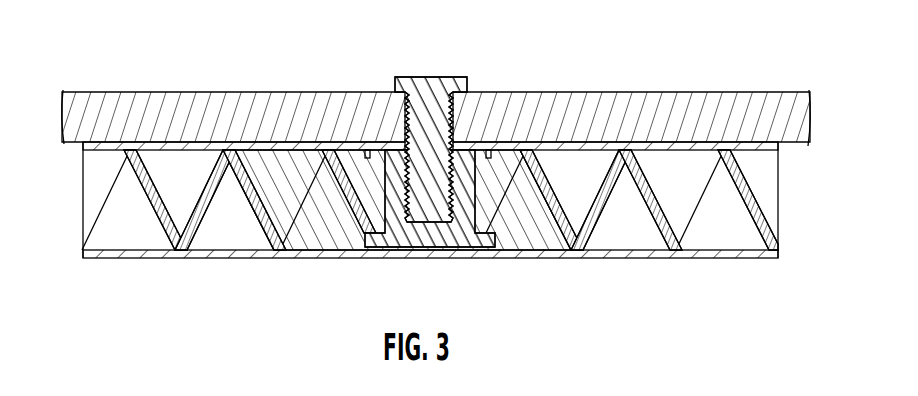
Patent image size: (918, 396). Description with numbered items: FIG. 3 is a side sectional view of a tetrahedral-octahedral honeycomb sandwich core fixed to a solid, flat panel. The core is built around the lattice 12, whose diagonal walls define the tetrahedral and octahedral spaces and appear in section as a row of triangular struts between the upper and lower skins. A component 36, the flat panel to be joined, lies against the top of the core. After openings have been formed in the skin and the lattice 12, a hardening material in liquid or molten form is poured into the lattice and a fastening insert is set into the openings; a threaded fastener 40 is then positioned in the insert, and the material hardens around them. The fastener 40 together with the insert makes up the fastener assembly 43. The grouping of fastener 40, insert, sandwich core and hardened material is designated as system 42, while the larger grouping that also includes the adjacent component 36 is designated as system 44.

The lattice 12 is at (752, 188).
The component 36 is at (95, 92).
The fastener 40 is at (447, 77).
The system 42 is at (133, 261).
The fastener assembly 43 is at (431, 258).
The system 44 is at (263, 72).